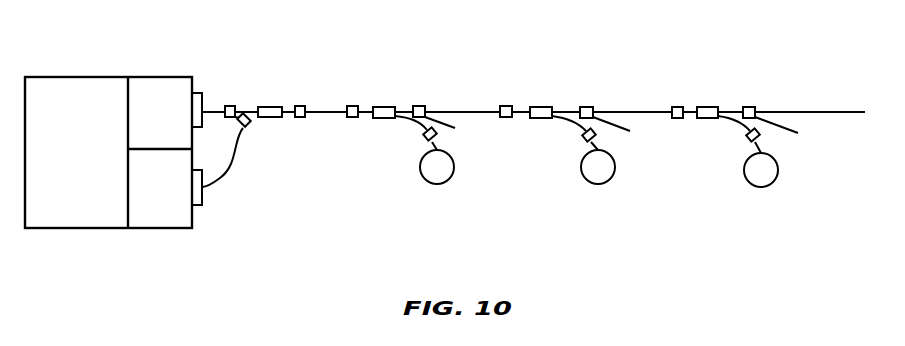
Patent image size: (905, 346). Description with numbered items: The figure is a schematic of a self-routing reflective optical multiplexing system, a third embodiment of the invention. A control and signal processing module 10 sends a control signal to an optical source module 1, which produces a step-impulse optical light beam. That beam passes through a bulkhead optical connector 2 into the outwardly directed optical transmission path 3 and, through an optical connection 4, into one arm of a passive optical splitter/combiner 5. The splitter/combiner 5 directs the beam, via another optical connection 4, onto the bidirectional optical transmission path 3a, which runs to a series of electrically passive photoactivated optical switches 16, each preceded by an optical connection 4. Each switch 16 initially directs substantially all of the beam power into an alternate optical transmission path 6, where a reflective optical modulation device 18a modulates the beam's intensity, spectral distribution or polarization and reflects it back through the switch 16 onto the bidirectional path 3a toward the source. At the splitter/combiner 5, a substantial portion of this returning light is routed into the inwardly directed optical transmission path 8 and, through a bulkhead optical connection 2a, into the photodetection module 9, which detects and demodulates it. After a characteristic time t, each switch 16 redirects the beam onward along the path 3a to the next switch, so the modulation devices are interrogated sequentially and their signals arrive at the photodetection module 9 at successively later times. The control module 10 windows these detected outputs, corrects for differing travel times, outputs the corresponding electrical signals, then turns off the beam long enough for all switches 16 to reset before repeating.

The control and signal processing module 10 is at (85, 97).
The optical source module 1 is at (168, 90).
The photodetection module 9 is at (148, 213).
The bulkhead optical connector 2 is at (200, 93).
The connector 2a is at (198, 200).
The cable 3 is at (212, 117).
The bidirectional optical transmission path 3a is at (330, 108).
The optical connection 4 is at (235, 105).
The passive optical splitter/combiner 5 is at (272, 107).
The alternate optical transmission path 6 is at (410, 127).
The inwardly directed optical transmission path 8 is at (238, 158).
The photoactivated optical switch 16 is at (383, 105).
The reflective optical modulation device 18a is at (437, 168).